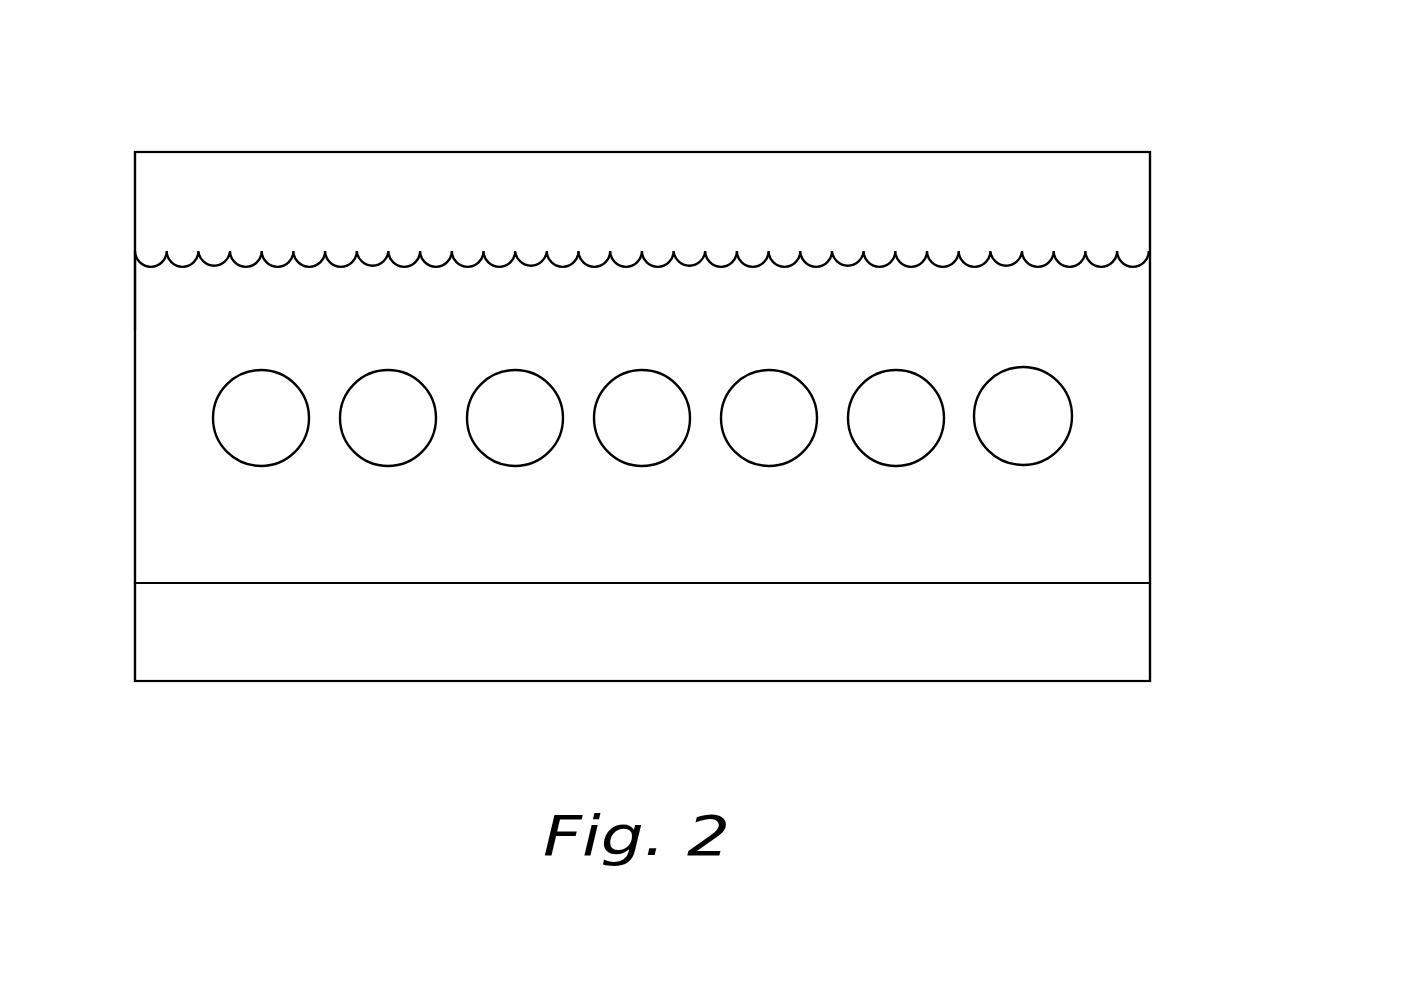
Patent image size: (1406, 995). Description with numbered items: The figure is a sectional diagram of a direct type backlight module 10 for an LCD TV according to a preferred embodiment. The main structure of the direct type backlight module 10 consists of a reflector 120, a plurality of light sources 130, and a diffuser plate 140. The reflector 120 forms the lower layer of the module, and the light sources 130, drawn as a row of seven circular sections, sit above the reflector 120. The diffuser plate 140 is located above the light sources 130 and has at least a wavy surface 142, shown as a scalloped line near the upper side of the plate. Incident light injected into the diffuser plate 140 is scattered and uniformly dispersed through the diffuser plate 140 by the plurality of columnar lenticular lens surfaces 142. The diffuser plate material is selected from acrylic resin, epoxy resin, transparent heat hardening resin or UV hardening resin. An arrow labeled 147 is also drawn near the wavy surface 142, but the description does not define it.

The direct type backlight module 10 is at (1162, 85).
The reflector 120 is at (1134, 630).
The light sources 130 is at (1018, 439).
The diffuser plate 140 is at (1130, 203).
The wavy surface 142 is at (277, 267).
The light output direction 147 is at (203, 290).